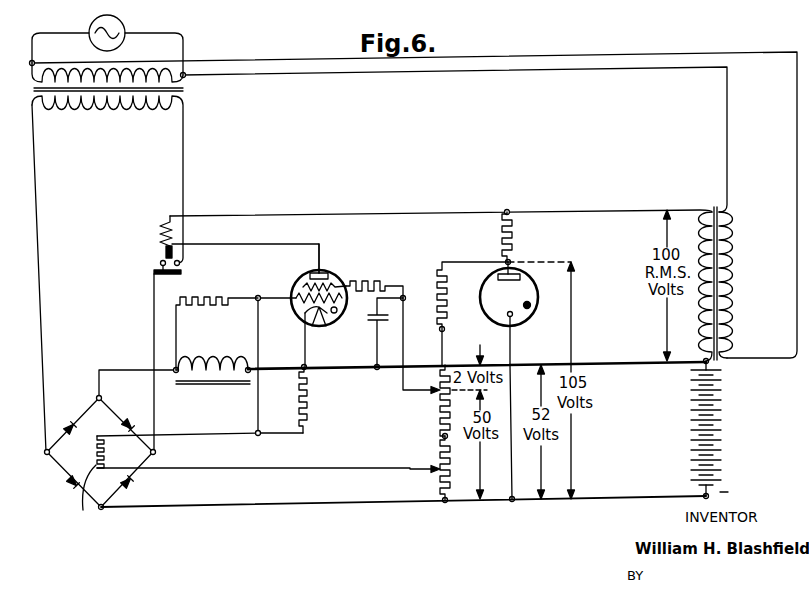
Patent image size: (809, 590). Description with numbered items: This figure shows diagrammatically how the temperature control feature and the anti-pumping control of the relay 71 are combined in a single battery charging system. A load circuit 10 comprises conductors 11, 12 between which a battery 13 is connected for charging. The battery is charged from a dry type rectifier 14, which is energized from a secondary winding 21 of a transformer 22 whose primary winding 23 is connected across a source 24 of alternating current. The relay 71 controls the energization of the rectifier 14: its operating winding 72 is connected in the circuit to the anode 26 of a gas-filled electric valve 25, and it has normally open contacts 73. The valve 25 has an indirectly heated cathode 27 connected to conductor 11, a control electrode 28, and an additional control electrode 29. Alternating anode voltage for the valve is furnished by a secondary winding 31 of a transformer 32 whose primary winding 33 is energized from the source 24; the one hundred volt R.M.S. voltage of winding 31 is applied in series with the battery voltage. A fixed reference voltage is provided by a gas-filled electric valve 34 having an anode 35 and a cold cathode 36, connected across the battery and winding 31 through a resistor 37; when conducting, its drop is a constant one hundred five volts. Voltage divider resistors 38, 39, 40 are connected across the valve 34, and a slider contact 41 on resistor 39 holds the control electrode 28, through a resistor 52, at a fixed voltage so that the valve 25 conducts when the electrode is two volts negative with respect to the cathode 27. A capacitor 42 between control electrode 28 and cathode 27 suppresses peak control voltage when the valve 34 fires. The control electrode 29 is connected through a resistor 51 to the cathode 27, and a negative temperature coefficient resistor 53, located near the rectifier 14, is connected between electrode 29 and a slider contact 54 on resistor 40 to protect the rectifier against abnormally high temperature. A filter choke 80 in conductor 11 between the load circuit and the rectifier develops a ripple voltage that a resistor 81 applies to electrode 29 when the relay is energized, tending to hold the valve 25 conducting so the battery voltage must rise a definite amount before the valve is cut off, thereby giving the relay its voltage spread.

The load circuit 10 is at (312, 305).
The conductor 11 is at (268, 367).
The conductor 12 is at (286, 502).
The battery 13 is at (733, 423).
The rectifier 14 is at (57, 410).
The secondary winding 21 is at (104, 100).
The transformer 22 is at (193, 99).
The primary winding 23 is at (127, 74).
The source of alternating current 24 is at (122, 28).
The gas-filled electric valve 25 is at (327, 273).
The anode 26 is at (317, 272).
The indirectly heated cathode 27 is at (303, 312).
The control electrode 28 is at (335, 287).
The additional control electrode 29 is at (297, 298).
The secondary winding 31 is at (700, 290).
The transformer 32 is at (690, 203).
The primary winding 33 is at (735, 290).
The electric valve 34 is at (509, 380).
The anode 35 is at (498, 277).
The cold cathode 36 is at (507, 318).
The resistor 37 is at (513, 250).
The resistor 38 is at (446, 298).
The resistor 39 is at (448, 414).
The resistor 40 is at (448, 478).
The slider contact 41 is at (432, 394).
The capacitor 42 is at (370, 317).
The resistor 51 is at (306, 412).
The resistor 52 is at (378, 280).
The negative temperature coefficient resistor 53 is at (105, 453).
The slider contact 54 is at (440, 471).
The relay 71 is at (150, 228).
The operating winding 72 is at (172, 237).
The normally open contacts 73 is at (161, 260).
The filter choke 80 is at (228, 360).
The resistor 81 is at (188, 300).